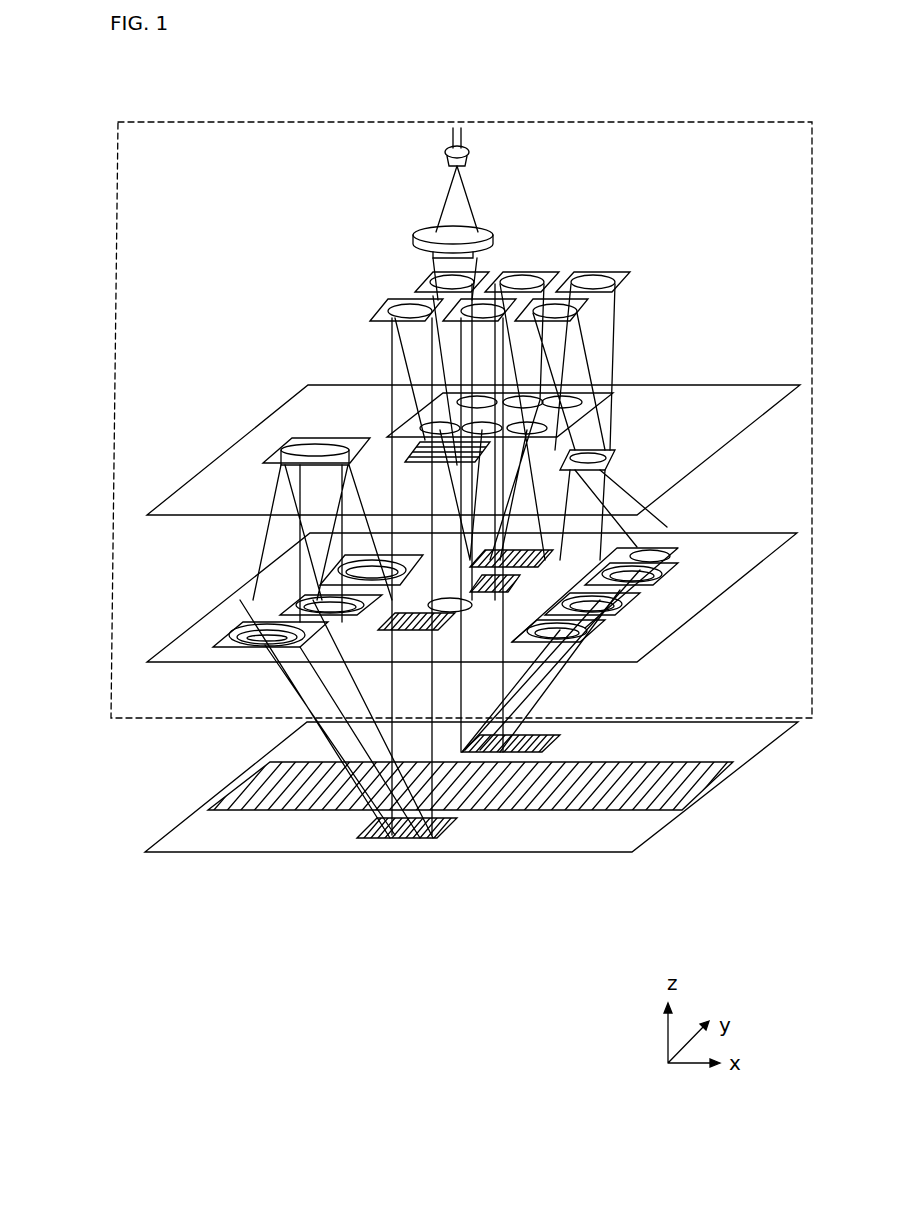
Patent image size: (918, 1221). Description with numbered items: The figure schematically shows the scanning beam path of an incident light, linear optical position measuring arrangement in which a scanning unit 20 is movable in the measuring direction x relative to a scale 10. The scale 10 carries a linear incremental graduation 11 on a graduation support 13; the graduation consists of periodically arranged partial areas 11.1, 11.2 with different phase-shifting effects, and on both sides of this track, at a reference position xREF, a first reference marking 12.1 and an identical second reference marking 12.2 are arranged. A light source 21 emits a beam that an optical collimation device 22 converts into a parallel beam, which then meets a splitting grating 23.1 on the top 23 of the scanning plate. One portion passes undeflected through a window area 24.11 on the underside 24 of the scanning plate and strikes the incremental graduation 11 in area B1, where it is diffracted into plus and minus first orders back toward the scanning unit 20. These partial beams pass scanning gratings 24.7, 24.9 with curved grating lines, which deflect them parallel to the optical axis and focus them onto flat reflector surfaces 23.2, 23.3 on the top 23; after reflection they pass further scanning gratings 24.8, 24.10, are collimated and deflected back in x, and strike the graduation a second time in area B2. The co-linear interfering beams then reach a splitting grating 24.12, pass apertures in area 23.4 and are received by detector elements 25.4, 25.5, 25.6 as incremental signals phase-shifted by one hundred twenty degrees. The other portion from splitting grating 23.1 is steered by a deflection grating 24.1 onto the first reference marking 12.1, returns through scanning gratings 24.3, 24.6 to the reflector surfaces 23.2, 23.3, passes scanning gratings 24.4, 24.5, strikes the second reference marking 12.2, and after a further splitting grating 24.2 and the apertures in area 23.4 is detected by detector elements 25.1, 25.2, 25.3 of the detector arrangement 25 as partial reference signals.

The scale 10 is at (148, 822).
The scanning unit 20 is at (146, 731).
The light source 21 is at (468, 152).
The optical collimation device 22 is at (430, 232).
The detector elements 25 is at (466, 253).
The detector element 25.1 is at (477, 273).
The detector element 25.2 is at (520, 282).
The detector element 25.3 is at (605, 282).
The detector element 25.4 is at (395, 311).
The detector element 25.5 is at (433, 295).
The detector element 25.6 is at (592, 312).
The top of the scanning plate 23 is at (212, 485).
The splitting grating 23.1 is at (375, 445).
The flat reflector surface 23.2 is at (293, 438).
The flat reflector surface 23.3 is at (617, 470).
The aperture area 23.4 is at (590, 393).
The underside of the scanning plate 24 is at (653, 632).
The deflection grating 24.1 is at (420, 625).
The splitting grating 24.2 is at (600, 518).
The scanning grating 24.3 is at (205, 657).
The scanning grating 24.4 is at (335, 550).
The scanning grating 24.5 is at (612, 552).
The scanning grating 24.6 is at (600, 648).
The scanning grating 24.7 is at (250, 622).
The scanning grating 24.8 is at (320, 585).
The scanning grating 24.9 is at (625, 590).
The scanning grating 24.10 is at (645, 572).
The window area 24.11 is at (275, 690).
The splitting grating 24.12 is at (600, 468).
The incremental graduation 11 is at (687, 797).
The partial area 11.1 is at (236, 797).
The partial area 11.2 is at (257, 793).
The first reference marking 12.1 is at (447, 828).
The second reference marking 12.2 is at (553, 735).
The graduation support 13 is at (750, 747).
The area B1 is at (320, 805).
The area B2 is at (472, 750).
The reference position xREF is at (390, 850).